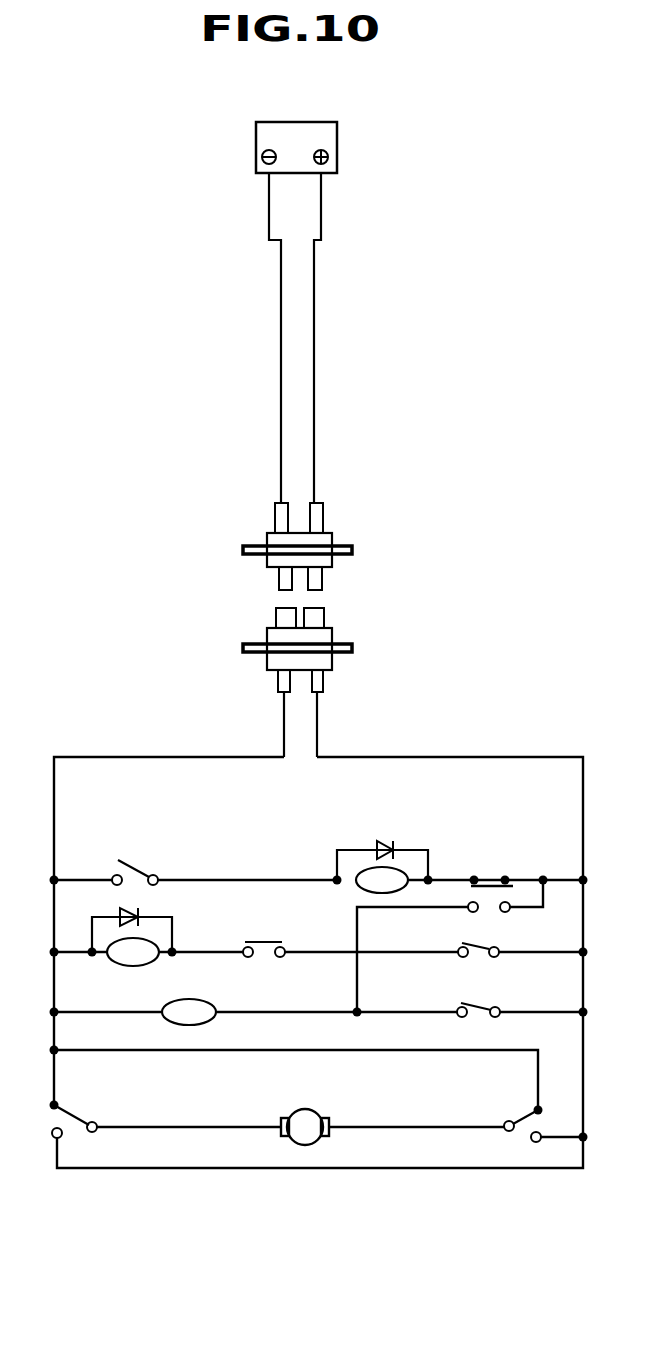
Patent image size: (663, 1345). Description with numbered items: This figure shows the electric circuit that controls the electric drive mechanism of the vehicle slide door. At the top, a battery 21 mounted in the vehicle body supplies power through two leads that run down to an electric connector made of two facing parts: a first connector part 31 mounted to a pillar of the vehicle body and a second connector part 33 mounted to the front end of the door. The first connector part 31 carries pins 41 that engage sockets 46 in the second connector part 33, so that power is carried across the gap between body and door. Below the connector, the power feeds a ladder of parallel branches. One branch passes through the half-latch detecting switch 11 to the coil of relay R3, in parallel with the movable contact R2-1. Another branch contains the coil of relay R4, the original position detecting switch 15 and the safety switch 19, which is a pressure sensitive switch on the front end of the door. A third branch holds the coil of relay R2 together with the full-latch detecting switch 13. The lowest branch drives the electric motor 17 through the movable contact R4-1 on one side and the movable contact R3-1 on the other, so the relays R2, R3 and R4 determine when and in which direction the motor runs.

The battery 21 is at (338, 157).
The first connector part 31 is at (364, 547).
The connector pins 41 is at (279, 585).
The connector sockets 46 is at (276, 618).
The second connector part 33 is at (364, 654).
The half-latch detecting switch 11 is at (145, 870).
The relay R3 is at (357, 890).
The movable contact of relay R2 R2-1 is at (490, 878).
The relay R4 is at (134, 967).
The original position detecting switch 15 is at (270, 941).
The safety switch 19 is at (489, 947).
The relay R2 is at (212, 1000).
The full-latch detecting switch 13 is at (493, 1005).
The movable contact of relay R4 R4-1 is at (77, 1118).
The electric motor 17 is at (318, 1116).
The movable contact of relay R3 R3-1 is at (525, 1118).